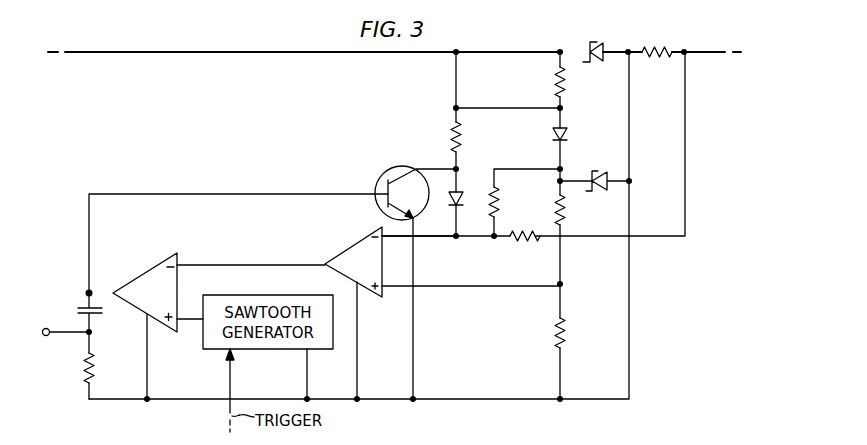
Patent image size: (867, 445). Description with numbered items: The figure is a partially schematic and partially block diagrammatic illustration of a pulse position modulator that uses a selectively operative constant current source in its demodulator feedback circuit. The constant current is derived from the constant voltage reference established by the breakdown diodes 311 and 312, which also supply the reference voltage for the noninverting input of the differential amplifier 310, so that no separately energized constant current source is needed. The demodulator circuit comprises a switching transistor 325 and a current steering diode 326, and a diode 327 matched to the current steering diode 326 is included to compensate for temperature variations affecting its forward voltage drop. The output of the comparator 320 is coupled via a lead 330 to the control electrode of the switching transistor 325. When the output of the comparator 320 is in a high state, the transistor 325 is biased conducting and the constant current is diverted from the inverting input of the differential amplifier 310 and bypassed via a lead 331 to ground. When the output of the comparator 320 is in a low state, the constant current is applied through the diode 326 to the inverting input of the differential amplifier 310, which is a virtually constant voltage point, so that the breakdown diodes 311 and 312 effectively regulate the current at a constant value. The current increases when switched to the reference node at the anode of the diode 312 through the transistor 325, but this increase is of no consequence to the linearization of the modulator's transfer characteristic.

The differential amplifier 310 is at (353, 245).
The breakdown diode 311 is at (594, 43).
The breakdown diode 312 is at (594, 170).
The comparator 320 is at (140, 277).
The switching transistor 325 is at (406, 173).
The current steering diode 326 is at (460, 186).
The diode 327 is at (576, 138).
The lead 330 is at (234, 194).
The lead 331 is at (414, 336).